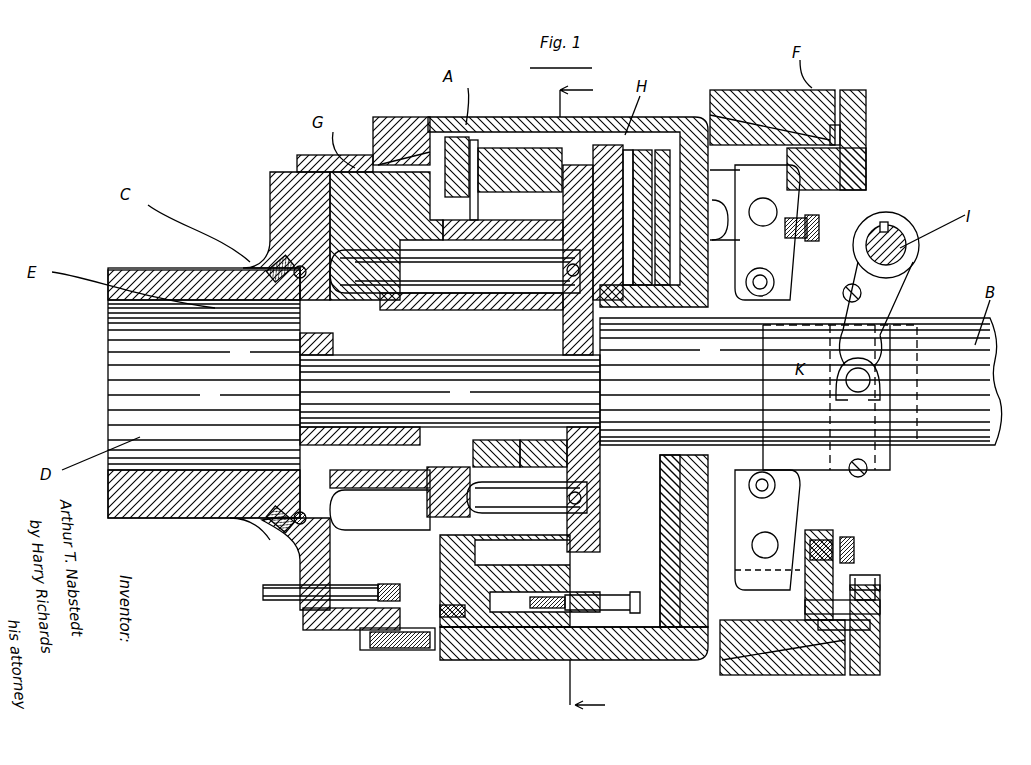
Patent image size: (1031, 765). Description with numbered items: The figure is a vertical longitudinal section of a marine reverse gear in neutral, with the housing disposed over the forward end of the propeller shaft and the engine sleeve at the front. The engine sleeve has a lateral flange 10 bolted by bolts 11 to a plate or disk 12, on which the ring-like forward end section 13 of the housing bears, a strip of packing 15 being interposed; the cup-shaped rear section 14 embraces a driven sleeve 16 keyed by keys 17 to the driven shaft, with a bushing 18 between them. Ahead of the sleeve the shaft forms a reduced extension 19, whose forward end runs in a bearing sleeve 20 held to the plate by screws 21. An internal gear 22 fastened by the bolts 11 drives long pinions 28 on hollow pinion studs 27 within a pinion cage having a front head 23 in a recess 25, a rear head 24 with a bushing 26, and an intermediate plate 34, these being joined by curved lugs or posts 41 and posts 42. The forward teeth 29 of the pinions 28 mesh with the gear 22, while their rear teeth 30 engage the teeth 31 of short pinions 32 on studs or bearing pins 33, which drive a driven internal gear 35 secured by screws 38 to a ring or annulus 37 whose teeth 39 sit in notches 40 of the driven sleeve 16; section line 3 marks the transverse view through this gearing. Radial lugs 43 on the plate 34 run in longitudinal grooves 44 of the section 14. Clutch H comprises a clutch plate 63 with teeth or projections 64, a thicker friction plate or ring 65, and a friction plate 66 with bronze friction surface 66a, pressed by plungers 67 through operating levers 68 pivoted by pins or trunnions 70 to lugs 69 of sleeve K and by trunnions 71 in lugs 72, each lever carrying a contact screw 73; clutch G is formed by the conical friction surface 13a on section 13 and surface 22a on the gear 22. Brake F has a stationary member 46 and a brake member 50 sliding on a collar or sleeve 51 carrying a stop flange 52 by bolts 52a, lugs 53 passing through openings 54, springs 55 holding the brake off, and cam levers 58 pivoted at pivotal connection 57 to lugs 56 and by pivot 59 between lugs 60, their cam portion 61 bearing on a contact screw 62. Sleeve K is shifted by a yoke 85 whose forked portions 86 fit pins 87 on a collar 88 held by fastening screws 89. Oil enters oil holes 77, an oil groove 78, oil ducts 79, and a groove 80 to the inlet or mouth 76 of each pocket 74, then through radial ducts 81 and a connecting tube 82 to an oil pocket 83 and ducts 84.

The section line 3- 3 is at (589, 398).
The lateral flange 10 is at (290, 190).
The bolts 11 is at (300, 606).
The plate or disk 12 is at (320, 165).
The forward end section 13 is at (392, 117).
The conical friction surface 13a is at (408, 160).
The rear section 14 is at (640, 660).
The strip of packing 15 is at (318, 158).
The driven sleeve 16 is at (700, 293).
The keys 17 is at (712, 308).
The bushing 18 is at (716, 470).
The extension 19 is at (440, 362).
The bearing sleeve 20 is at (422, 436).
The screws 21 is at (298, 352).
The internal gear 22 is at (372, 170).
The conical friction surface 22a is at (385, 150).
The front plate or head 23 is at (350, 248).
The rear plate or head 24 is at (585, 165).
The recess 25 is at (300, 548).
The bushing 26 is at (562, 344).
The pinion studs 27 is at (345, 270).
The pinions 28 is at (372, 238).
The teeth 29 is at (380, 213).
The teeth 30 is at (486, 220).
The teeth 31 is at (540, 452).
The pinions 32 is at (496, 452).
The studs or bearing pins 33 is at (508, 590).
The intermediate plate 34 is at (455, 630).
The internal gear 35 is at (518, 148).
The ring or annulus 37 is at (648, 150).
The screws 38 is at (600, 612).
The teeth 39 is at (696, 252).
The notches 40 is at (660, 310).
The curved lugs or posts 41 is at (528, 580).
The posts 42 is at (395, 652).
The radial lugs 43 is at (452, 138).
The longitudinal grooves 44 is at (508, 130).
The stationary member 46 is at (815, 100).
The brake member 50 is at (835, 134).
The collar or sleeve 51 is at (770, 625).
The stop flange 52 is at (882, 645).
The bolts 52a is at (880, 588).
The lugs 53 is at (882, 582).
The openings 54 is at (882, 608).
The springs 55 is at (872, 625).
The lugs 56 is at (770, 493).
The pivotal connection 57 is at (776, 485).
The cam levers 58 is at (778, 528).
The pivot 59 is at (770, 553).
The lugs 60 is at (759, 530).
The cam portion 61 is at (800, 570).
The contact screw 62 is at (856, 550).
The clutch plate 63 is at (668, 150).
The teeth or projections 64 is at (640, 140).
The friction plate or ring 65 is at (735, 125).
The friction plate 66 is at (660, 640).
The bronze friction surface 66a is at (690, 655).
The plungers 67 is at (778, 212).
The operating levers 68 is at (772, 248).
The lugs 69 is at (775, 282).
The pins or trunnions 70 is at (752, 282).
The trunnions 71 is at (770, 200).
The lugs 72 is at (725, 220).
The contact screw 73 is at (820, 228).
The pocket 74 is at (455, 271).
The inlet or mouth 76 is at (200, 330).
The oil holes 77 is at (275, 528).
The oil groove 78 is at (230, 518).
The oil ducts 79 is at (300, 290).
The groove 80 is at (380, 510).
The radial ducts 81 is at (378, 294).
The connecting tube 82 is at (569, 498).
The oil pocket 83 is at (527, 497).
The ducts 84 is at (486, 501).
The yoke 85 is at (905, 290).
The forked portions 86 is at (958, 445).
The pins 87 is at (858, 385).
The collar 88 is at (858, 388).
The fastening screws 89 is at (862, 293).